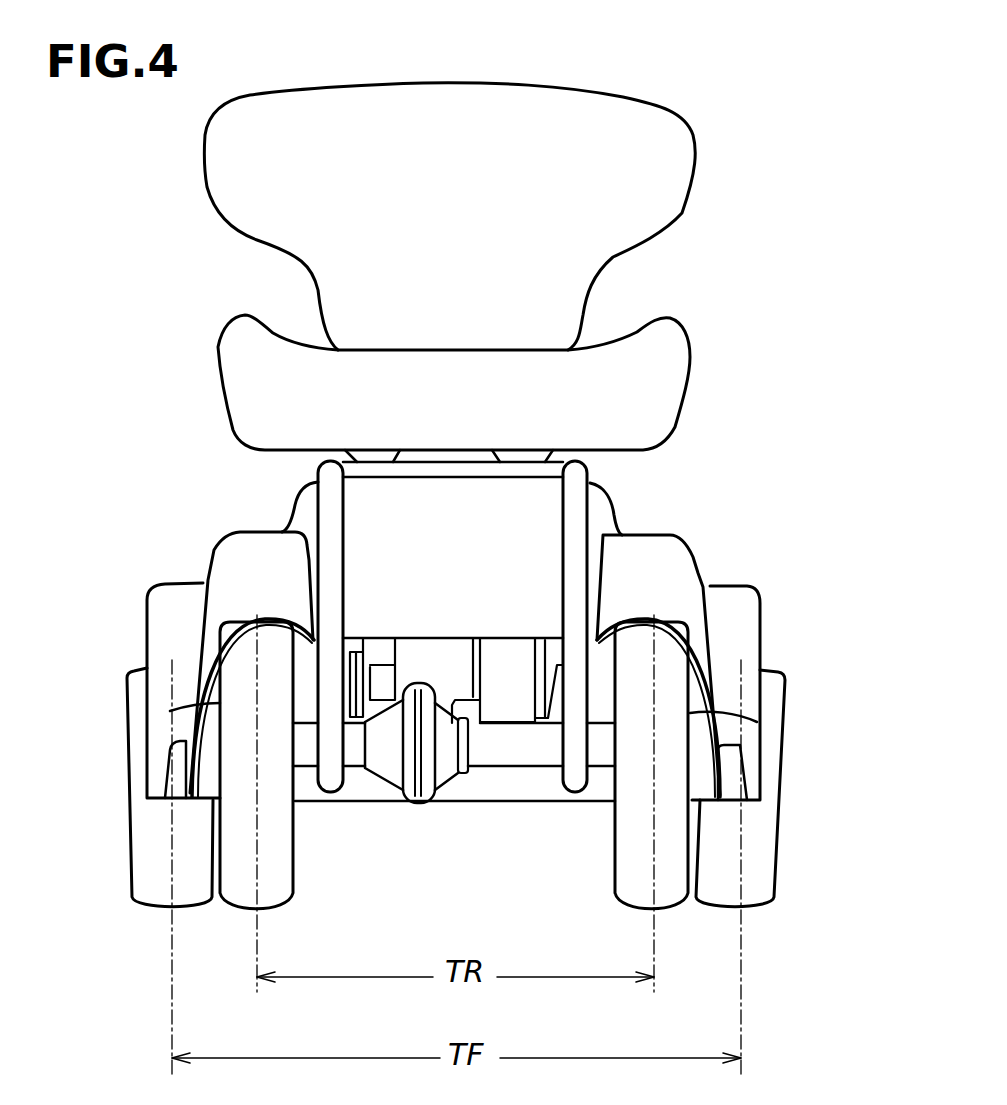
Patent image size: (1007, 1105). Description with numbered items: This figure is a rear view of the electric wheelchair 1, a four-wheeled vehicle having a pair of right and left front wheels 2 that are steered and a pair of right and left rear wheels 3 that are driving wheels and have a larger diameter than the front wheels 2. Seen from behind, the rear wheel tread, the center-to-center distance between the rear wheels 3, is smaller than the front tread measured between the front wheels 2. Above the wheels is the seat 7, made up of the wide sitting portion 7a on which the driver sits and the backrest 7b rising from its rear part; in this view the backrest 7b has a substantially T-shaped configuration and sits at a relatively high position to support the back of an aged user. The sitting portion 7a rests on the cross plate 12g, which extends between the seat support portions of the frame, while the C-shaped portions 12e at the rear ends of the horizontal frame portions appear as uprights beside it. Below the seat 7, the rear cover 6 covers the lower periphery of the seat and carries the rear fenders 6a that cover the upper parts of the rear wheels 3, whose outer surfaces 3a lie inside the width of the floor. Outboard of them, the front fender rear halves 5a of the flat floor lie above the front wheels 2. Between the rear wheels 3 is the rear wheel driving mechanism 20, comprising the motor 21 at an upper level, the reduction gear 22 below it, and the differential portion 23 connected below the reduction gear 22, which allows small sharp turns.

The electric wheelchair 1 is at (133, 215).
The seat 7 is at (676, 320).
The sitting portion 7a is at (250, 362).
The backrest 7b is at (565, 105).
The C-shaped portion 12e is at (328, 505).
The cross plate 12g is at (458, 470).
The rear cover 6 is at (530, 514).
The rear fender 6a is at (228, 557).
The front fender rear half 5a is at (165, 622).
The outer surface of rear wheel 3a is at (170, 711).
The front wheel 2 is at (148, 860).
The rear wheel 3 is at (242, 898).
The rear wheel driving mechanism 20 is at (470, 712).
The motor 21 is at (500, 660).
The reduction gear 22 is at (428, 655).
The differential portion 23 is at (385, 763).